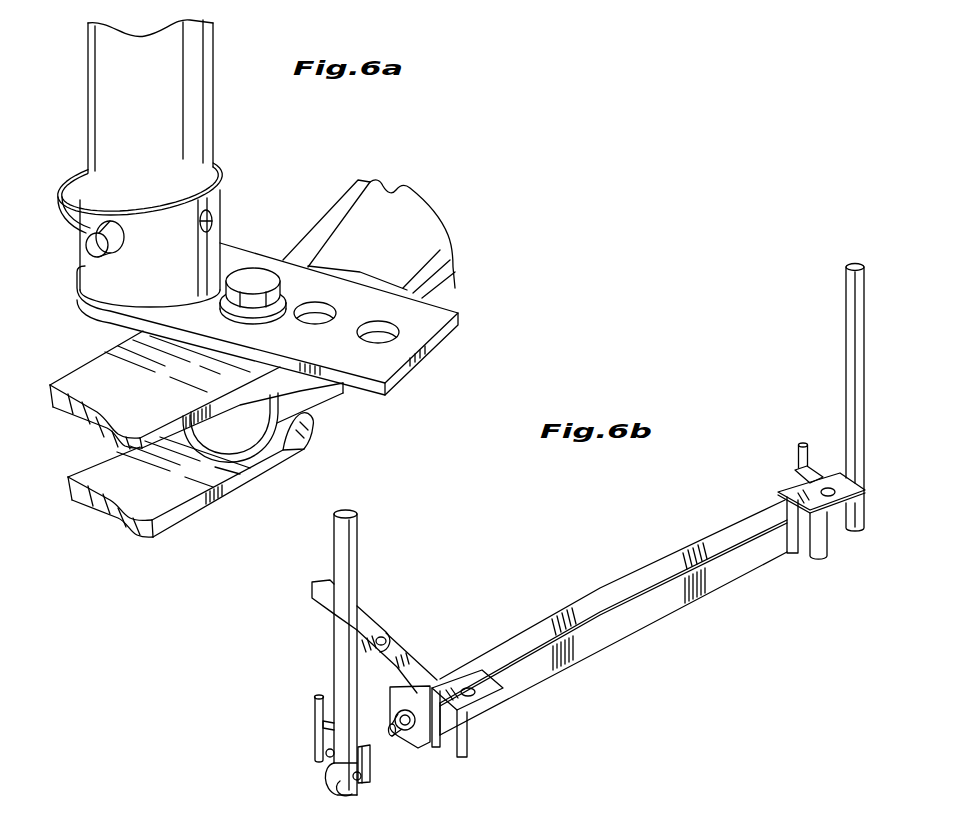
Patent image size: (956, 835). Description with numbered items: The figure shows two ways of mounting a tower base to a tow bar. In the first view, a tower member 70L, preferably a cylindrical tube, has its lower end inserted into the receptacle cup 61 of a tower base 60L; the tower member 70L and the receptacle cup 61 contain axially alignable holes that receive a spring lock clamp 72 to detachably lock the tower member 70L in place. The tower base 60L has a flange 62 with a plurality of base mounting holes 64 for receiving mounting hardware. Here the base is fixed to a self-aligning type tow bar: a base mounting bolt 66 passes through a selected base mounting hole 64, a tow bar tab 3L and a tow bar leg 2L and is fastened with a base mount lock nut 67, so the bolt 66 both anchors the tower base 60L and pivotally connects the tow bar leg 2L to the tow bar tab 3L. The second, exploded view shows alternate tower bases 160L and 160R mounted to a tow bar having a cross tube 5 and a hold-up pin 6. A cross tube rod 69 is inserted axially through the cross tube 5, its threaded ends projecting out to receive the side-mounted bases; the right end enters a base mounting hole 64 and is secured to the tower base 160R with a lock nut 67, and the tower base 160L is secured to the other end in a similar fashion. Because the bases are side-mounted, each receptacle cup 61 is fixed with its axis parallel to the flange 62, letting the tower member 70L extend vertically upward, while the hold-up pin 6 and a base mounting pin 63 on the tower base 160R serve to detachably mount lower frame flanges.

In FIG. 6a, the tower member 70L is at (183, 87).
In FIG. 6b, the tower member 70L is at (342, 668).
In FIG. 6a, the spring lock clamp 72 is at (57, 197).
In FIG. 6b, the spring lock clamp 72 is at (362, 776).
In FIG. 6a, the receptacle cup 61 is at (228, 187).
In FIG. 6b, the receptacle cup 61 is at (332, 774).
In FIG. 6a, the tower base 60L is at (187, 248).
In FIG. 6a, the tow bar leg 2L is at (384, 212).
In FIG. 6a, the base mounting bolt 66 is at (428, 297).
In FIG. 6a, the flange 62 is at (433, 355).
In FIG. 6a, the base mounting hole 64 is at (267, 283).
In FIG. 6a, the tow bar tab 3L is at (295, 451).
In FIG. 6b, the hold-up pin 6 is at (795, 454).
In FIG. 6b, the tower base 160R is at (853, 530).
In FIG. 6b, the cross tube 5 is at (638, 583).
In FIG. 6b, the base mounting pin 63 is at (312, 724).
In FIG. 6b, the base mount lock nut 67 is at (326, 753).
In FIG. 6b, the tower base 160L is at (345, 791).
In FIG. 6b, the cross tube rod 69 is at (394, 740).